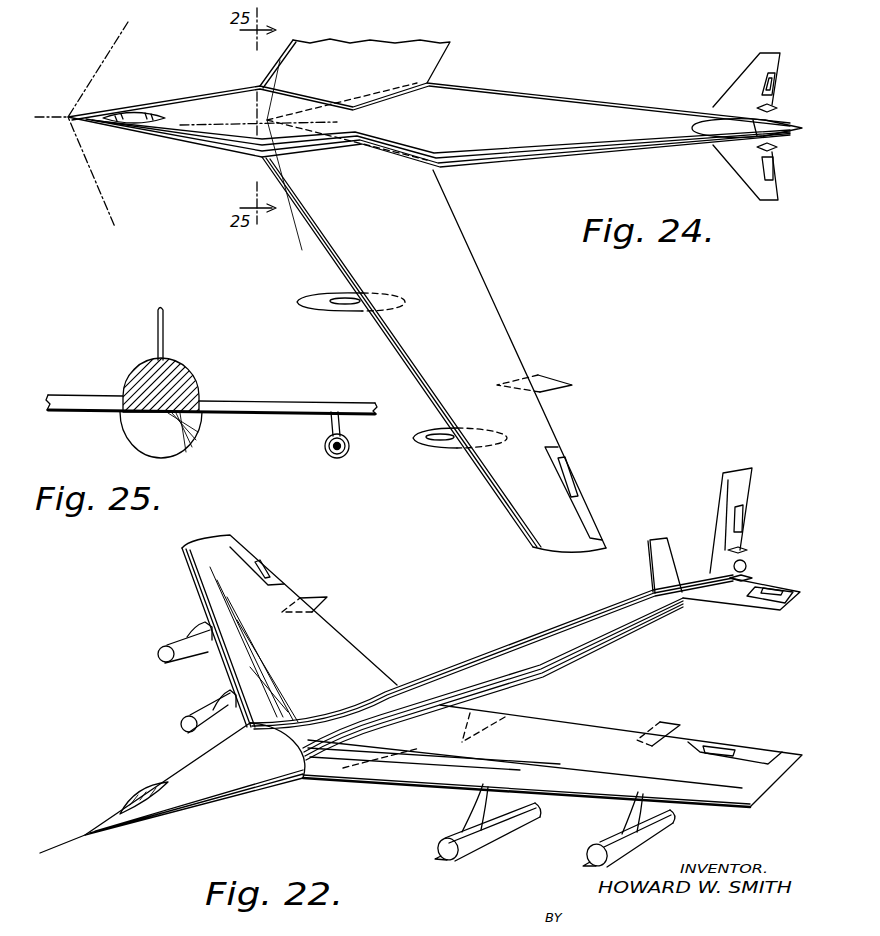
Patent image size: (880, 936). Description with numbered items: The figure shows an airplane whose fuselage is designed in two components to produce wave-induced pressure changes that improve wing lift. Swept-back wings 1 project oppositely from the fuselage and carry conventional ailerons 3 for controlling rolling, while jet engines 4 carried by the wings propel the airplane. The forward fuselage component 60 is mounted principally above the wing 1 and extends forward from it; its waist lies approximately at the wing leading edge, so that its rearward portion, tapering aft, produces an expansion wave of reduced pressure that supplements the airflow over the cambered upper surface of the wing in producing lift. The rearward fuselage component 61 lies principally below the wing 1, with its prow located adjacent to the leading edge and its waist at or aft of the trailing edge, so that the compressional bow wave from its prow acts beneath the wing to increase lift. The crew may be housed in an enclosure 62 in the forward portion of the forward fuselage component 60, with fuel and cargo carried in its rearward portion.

In FIG. 24, the wing 1 is at (353, 50).
In FIG. 25, the wing 1 is at (84, 396).
In FIG. 22, the wing 1 is at (238, 662).
In FIG. 24, the aileron 3 is at (588, 507).
In FIG. 22, the aileron 3 is at (250, 555).
In FIG. 24, the jet engine 4 is at (318, 291).
In FIG. 25, the jet engine 4 is at (325, 442).
In FIG. 22, the jet engine 4 is at (175, 637).
In FIG. 24, the forward fuselage component 60 is at (203, 107).
In FIG. 25, the forward fuselage component 60 is at (188, 367).
In FIG. 22, the forward fuselage component 60 is at (223, 768).
In FIG. 24, the rearward fuselage component 61 is at (507, 6).
In FIG. 25, the rearward fuselage component 61 is at (197, 437).
In FIG. 22, the rearward fuselage component 61 is at (523, 707).
In FIG. 24, the enclosure 62 is at (132, 110).
In FIG. 22, the enclosure 62 is at (142, 795).